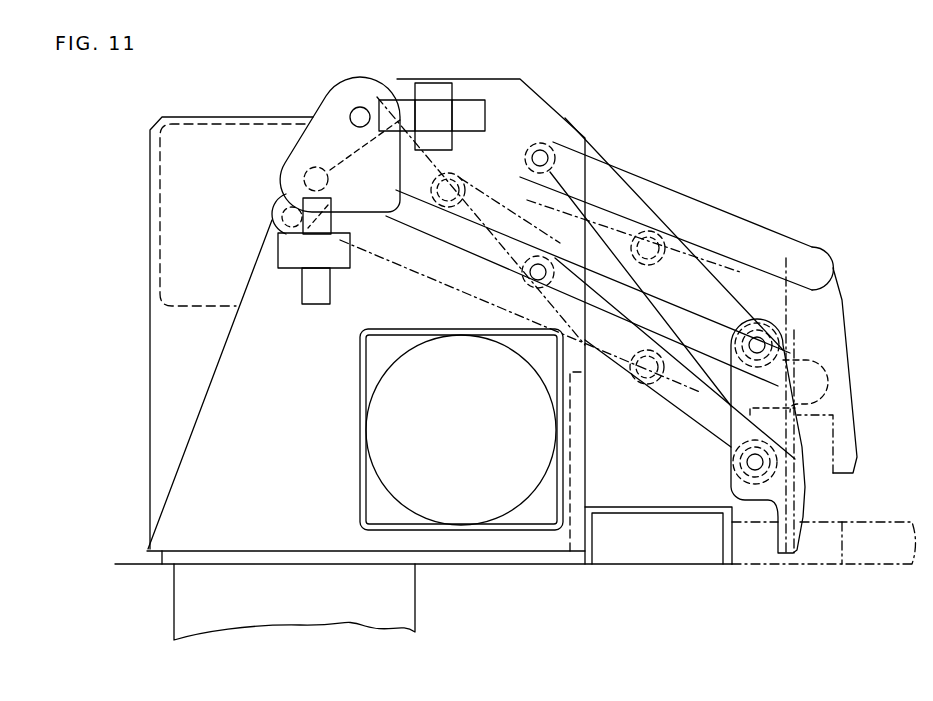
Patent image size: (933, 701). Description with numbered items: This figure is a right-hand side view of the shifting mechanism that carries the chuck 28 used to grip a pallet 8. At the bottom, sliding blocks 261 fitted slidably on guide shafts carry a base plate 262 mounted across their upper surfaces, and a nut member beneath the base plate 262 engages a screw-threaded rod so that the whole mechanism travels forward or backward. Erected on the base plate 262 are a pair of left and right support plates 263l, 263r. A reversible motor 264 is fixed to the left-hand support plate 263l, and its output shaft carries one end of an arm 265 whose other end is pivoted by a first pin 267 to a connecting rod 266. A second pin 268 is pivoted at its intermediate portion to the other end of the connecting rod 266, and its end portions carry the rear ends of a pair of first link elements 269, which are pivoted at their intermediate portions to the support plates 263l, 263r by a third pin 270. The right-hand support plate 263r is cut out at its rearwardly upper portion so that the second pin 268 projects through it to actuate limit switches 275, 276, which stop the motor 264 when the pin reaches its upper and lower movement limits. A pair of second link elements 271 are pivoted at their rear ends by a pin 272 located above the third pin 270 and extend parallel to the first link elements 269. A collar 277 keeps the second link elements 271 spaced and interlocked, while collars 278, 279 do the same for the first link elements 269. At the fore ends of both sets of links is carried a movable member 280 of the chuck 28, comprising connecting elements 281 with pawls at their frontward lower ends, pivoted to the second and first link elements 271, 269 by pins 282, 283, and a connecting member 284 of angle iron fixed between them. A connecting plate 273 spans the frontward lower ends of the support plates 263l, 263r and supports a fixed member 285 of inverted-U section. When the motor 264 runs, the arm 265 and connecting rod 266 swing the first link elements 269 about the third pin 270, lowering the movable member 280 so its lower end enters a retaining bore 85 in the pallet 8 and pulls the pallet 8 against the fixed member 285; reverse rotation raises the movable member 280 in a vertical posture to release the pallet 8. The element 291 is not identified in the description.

The pallet 8 is at (856, 570).
The chuck 28 is at (743, 572).
The retaining bore 85 is at (816, 558).
The sliding blocks 261 is at (188, 580).
The base plate 262 is at (517, 563).
The left-hand support plate 263l is at (158, 466).
The right-hand support plate 263r is at (175, 522).
The motor 264 is at (172, 115).
The arm 265 is at (272, 213).
The connecting rod 266 is at (298, 156).
The first pin 267 is at (296, 176).
The second pin 268 is at (351, 113).
The first link elements 269 is at (670, 398).
The third pin 270 is at (527, 277).
The second link elements 271 is at (702, 284).
The pin 272 is at (549, 152).
The connecting plate 273 is at (575, 438).
The limit switch 275 is at (410, 108).
The limit switch 276 is at (330, 222).
The collar 277 is at (665, 244).
The collar 278 is at (630, 370).
The collar 279 is at (456, 184).
The movable member 280 is at (858, 468).
The connecting elements 281 is at (800, 492).
The pin 282 is at (770, 338).
The pin 283 is at (744, 465).
The connecting member 284 is at (803, 485).
The fixed member 285 is at (650, 513).
The roller 291 is at (456, 512).